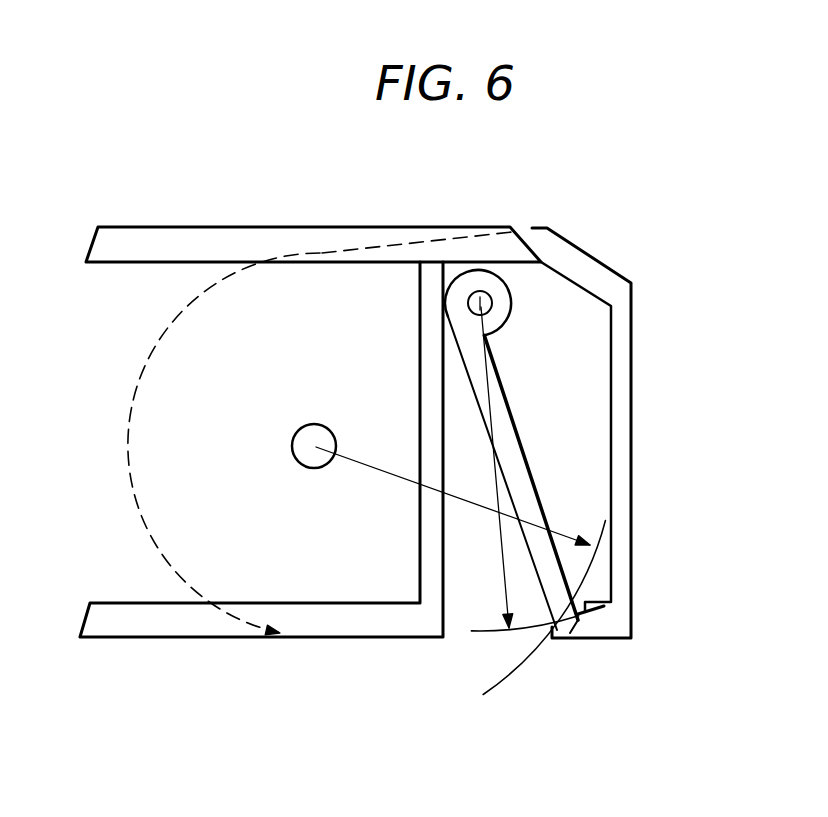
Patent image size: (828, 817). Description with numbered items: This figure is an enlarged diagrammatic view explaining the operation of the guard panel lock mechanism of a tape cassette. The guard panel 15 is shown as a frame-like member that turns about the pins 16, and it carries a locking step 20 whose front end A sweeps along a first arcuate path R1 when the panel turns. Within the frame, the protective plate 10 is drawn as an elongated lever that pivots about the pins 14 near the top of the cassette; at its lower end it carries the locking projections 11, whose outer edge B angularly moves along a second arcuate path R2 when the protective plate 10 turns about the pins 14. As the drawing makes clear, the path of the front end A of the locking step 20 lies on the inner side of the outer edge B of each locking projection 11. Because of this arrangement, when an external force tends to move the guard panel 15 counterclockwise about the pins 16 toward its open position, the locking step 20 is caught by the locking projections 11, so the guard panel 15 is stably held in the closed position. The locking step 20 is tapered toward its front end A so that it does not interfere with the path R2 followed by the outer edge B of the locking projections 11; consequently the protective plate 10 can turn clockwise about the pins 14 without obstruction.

The protective plate 10 is at (511, 418).
The locking projections 11 is at (584, 606).
The pins 14 is at (492, 305).
The guard panel 15 is at (632, 458).
The pins 16 is at (291, 447).
The locking step 20 is at (570, 633).
The front end A is at (548, 631).
The outer edge B is at (582, 621).
The first arcuate path R1 is at (500, 688).
The second arcuate path R2 is at (485, 628).